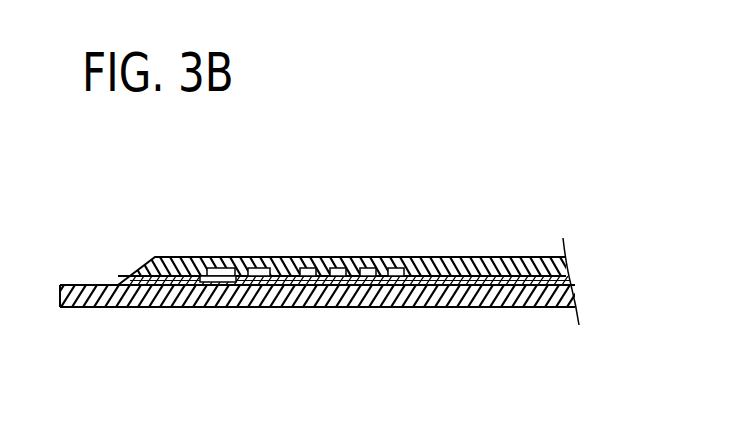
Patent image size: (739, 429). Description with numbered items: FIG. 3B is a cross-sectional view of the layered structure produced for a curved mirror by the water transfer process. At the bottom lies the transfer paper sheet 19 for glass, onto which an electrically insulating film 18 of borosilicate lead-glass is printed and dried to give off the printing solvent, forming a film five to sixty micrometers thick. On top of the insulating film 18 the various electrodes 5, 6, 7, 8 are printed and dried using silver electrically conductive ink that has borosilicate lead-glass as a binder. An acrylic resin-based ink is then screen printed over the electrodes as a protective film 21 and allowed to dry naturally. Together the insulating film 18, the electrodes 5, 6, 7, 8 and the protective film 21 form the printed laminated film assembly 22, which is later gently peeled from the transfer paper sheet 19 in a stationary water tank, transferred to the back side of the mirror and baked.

The electrode 5 is at (222, 257).
The electrode 6 is at (263, 257).
The electrode 7 is at (308, 257).
The electrode 8 is at (338, 257).
The electrically insulating film 18 is at (215, 307).
The transfer paper sheet 19 is at (85, 307).
The protective film 21 is at (158, 257).
The printed laminated film assembly 22 is at (585, 257).